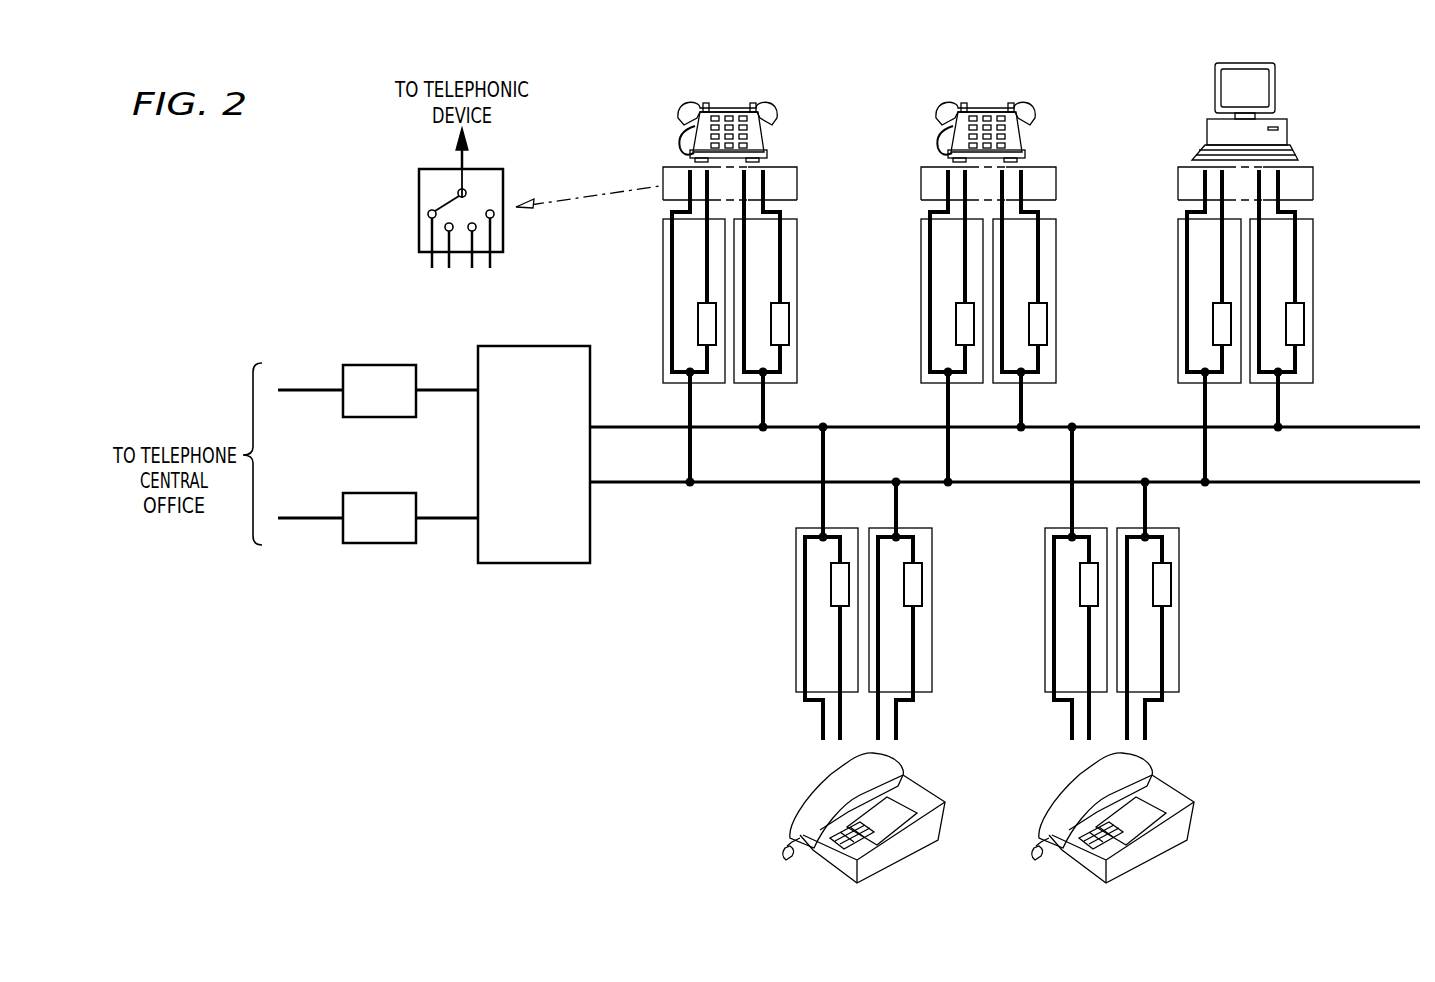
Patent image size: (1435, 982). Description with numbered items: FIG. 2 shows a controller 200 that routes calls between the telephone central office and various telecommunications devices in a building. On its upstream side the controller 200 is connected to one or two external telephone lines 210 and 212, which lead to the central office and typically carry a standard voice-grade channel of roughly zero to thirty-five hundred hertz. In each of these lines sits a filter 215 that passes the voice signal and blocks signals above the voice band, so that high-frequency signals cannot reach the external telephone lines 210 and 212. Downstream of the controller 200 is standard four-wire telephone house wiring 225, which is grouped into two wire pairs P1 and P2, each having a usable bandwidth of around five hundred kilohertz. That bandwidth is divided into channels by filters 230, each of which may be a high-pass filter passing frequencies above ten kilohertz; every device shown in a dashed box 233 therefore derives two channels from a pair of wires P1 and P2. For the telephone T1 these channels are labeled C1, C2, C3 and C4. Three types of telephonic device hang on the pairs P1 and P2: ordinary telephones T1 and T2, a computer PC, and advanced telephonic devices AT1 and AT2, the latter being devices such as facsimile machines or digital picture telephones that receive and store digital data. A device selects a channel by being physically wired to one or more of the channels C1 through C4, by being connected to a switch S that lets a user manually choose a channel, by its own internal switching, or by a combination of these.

The controller 200 is at (533, 345).
The external telephone line 210 is at (303, 386).
The external telephone line 212 is at (303, 522).
The filter 215 is at (379, 364).
The telephone house wiring 225 is at (622, 568).
The filter 230 is at (698, 334).
The device 233 is at (663, 272).
The wire pair P1 is at (1386, 425).
The wire pair P2 is at (1386, 486).
The switch S is at (419, 196).
The telephone T1 is at (727, 114).
The telephone T2 is at (985, 114).
The computer PC is at (1245, 97).
The channel C1 is at (690, 174).
The channel C2 is at (707, 186).
The channel C3 is at (744, 186).
The channel C4 is at (765, 174).
The advanced telephonic device AT1 is at (864, 839).
The advanced telephonic device AT2 is at (1113, 839).